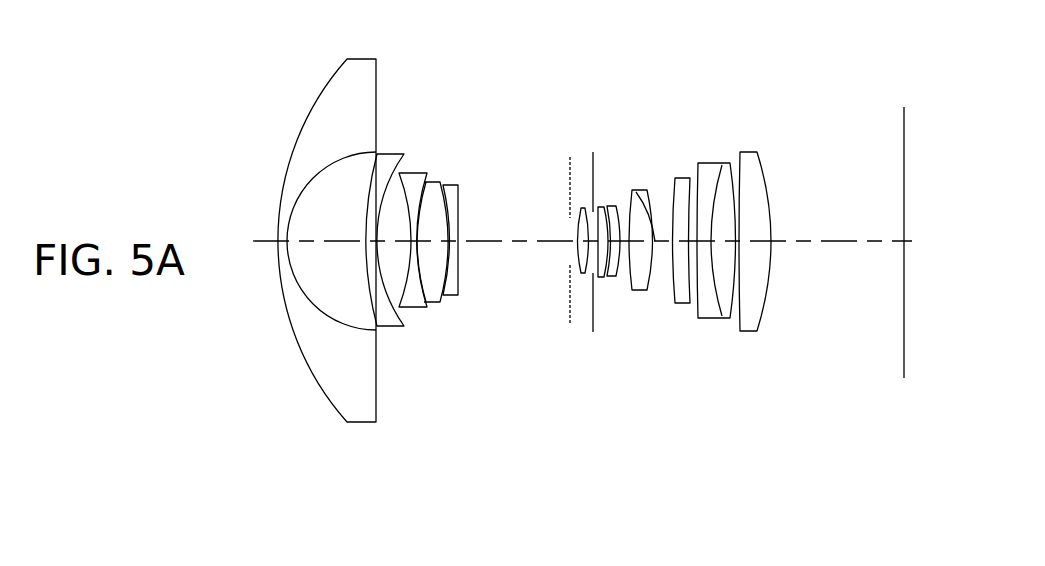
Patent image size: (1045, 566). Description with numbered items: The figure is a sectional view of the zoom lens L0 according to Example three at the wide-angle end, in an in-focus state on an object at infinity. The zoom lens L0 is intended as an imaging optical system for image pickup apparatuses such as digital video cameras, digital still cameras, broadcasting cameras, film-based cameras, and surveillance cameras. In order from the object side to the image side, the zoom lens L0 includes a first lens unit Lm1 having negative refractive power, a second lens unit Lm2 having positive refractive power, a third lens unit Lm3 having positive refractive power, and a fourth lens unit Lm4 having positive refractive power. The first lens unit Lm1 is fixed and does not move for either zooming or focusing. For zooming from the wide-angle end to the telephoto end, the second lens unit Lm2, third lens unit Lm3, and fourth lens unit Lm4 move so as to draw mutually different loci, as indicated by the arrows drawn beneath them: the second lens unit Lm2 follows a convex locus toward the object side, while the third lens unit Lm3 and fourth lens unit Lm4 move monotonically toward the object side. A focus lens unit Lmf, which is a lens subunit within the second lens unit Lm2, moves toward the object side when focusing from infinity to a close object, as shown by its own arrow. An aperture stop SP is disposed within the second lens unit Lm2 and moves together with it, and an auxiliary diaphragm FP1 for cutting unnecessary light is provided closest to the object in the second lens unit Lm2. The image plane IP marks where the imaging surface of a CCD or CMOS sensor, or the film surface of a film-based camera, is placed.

The zoom lens L0 is at (903, 80).
The first lens unit Lm1 is at (493, 413).
The second lens unit Lm2 is at (586, 510).
The third lens unit Lm3 is at (652, 505).
The fourth lens unit Lm4 is at (722, 505).
The focus lens unit Lmf is at (597, 315).
The auxiliary diaphragm FP1 is at (568, 168).
The aperture stop SP is at (594, 160).
The image plane IP is at (923, 226).